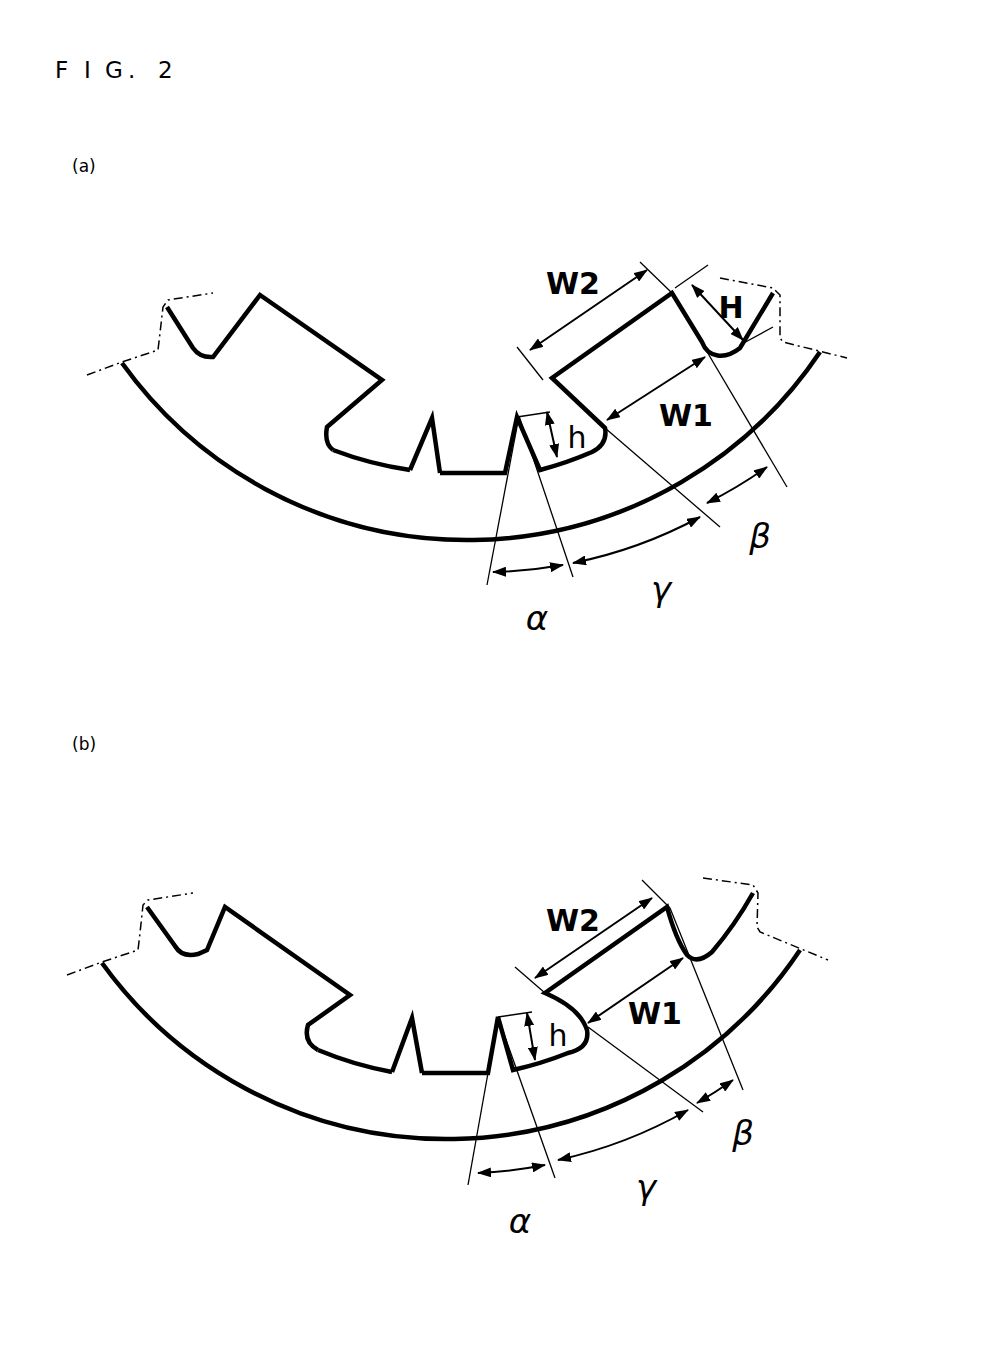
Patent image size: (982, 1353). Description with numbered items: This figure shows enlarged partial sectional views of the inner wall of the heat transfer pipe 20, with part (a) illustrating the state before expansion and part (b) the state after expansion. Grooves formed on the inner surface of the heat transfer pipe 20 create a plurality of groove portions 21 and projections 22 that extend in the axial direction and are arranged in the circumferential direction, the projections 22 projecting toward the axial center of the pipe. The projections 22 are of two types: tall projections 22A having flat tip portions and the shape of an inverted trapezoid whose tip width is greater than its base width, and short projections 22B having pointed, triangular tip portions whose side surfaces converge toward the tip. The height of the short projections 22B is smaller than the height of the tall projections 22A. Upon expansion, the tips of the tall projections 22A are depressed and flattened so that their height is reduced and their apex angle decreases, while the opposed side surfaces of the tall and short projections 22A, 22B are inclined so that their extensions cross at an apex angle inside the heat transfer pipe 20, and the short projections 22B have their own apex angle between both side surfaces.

The heat transfer pipe 20 is at (236, 466).
The groove portions 21 is at (463, 455).
The projections 22 is at (301, 624).
The first projections 22A is at (320, 332).
The second projections 22B is at (432, 417).